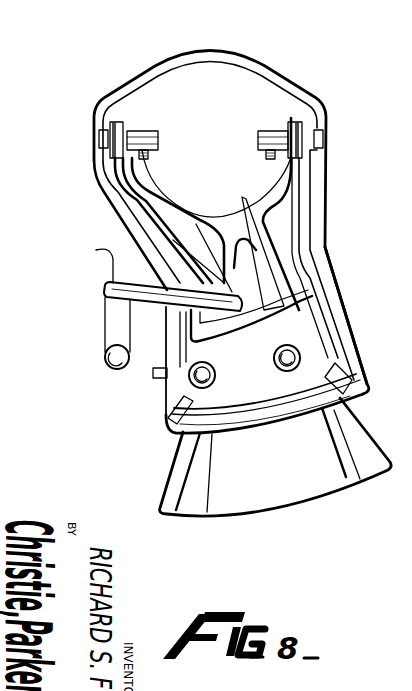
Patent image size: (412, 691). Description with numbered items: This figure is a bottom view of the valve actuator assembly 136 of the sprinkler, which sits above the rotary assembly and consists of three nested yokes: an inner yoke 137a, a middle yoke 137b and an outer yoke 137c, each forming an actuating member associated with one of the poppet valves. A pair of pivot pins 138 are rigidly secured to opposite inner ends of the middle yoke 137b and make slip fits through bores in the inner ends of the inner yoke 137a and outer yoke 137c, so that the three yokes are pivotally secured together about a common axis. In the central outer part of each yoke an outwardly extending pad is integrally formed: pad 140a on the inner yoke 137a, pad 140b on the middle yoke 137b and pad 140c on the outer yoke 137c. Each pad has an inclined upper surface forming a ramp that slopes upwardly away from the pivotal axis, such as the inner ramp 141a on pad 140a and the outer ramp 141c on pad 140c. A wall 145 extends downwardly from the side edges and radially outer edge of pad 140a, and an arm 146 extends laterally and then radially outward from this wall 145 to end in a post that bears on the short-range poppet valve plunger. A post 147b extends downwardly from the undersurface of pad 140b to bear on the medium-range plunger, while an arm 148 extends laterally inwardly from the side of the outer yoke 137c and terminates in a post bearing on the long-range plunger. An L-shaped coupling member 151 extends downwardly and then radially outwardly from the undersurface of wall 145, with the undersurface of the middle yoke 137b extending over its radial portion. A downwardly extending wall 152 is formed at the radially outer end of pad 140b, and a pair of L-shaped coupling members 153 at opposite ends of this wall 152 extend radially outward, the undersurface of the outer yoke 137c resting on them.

The valve actuator assembly 136 is at (358, 202).
The inner yoke 137a is at (273, 248).
The middle yoke 137b is at (302, 264).
The outer yoke 137c is at (328, 275).
The pivot pins 138 is at (258, 138).
The pad 140a is at (233, 217).
The pad 140b is at (262, 370).
The pad 140c is at (300, 476).
The inner ramp 141a is at (106, 357).
The outer ramp 141c is at (180, 378).
The wall 145 is at (244, 212).
The arm 146 is at (117, 283).
The post 147b is at (302, 357).
The arm 148 is at (192, 374).
The L-shaped coupling member 151 is at (330, 313).
The wall 152 is at (250, 392).
The L-shaped coupling members 153 is at (168, 416).